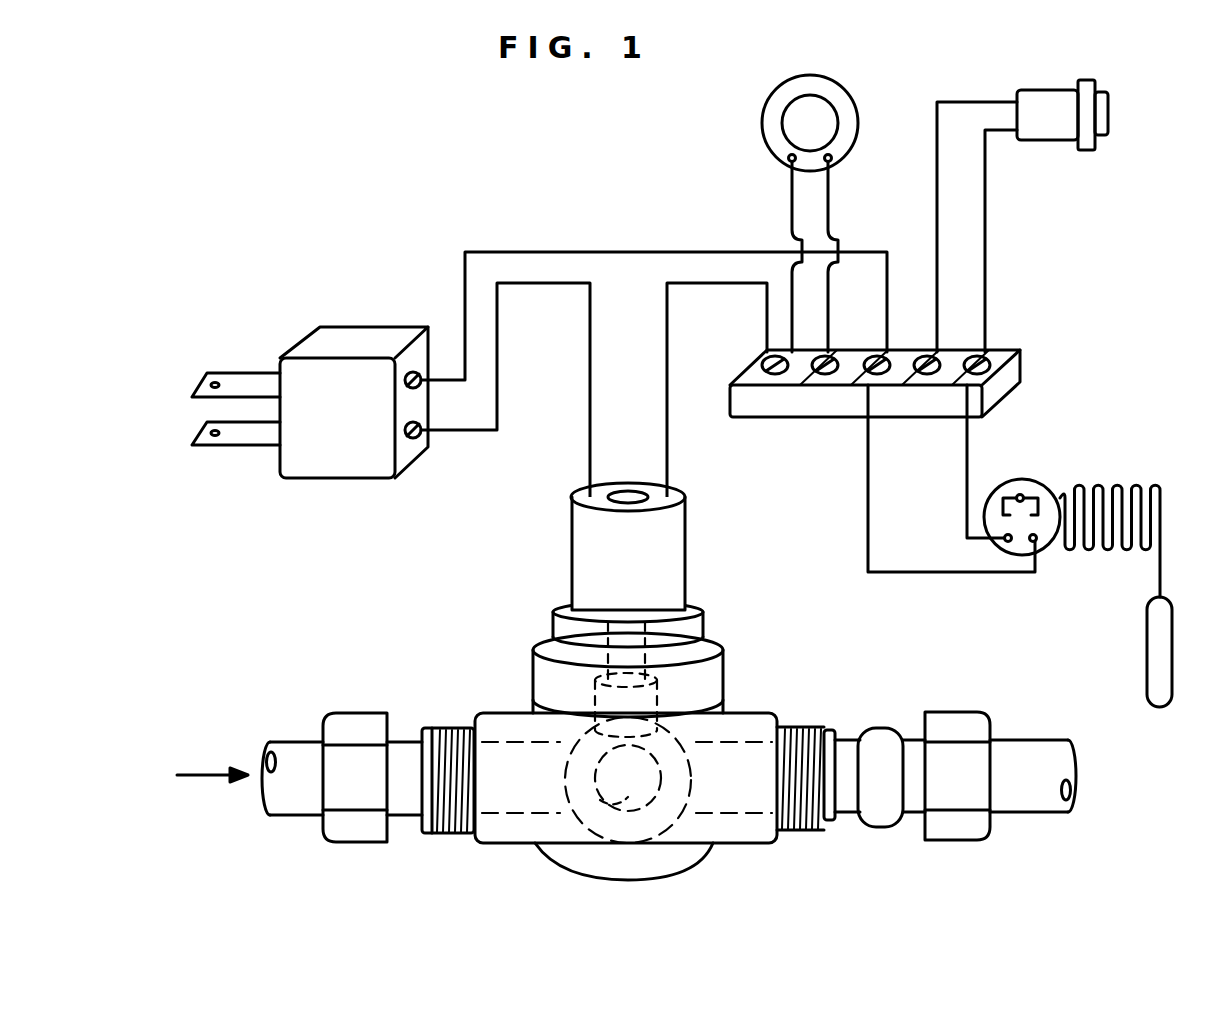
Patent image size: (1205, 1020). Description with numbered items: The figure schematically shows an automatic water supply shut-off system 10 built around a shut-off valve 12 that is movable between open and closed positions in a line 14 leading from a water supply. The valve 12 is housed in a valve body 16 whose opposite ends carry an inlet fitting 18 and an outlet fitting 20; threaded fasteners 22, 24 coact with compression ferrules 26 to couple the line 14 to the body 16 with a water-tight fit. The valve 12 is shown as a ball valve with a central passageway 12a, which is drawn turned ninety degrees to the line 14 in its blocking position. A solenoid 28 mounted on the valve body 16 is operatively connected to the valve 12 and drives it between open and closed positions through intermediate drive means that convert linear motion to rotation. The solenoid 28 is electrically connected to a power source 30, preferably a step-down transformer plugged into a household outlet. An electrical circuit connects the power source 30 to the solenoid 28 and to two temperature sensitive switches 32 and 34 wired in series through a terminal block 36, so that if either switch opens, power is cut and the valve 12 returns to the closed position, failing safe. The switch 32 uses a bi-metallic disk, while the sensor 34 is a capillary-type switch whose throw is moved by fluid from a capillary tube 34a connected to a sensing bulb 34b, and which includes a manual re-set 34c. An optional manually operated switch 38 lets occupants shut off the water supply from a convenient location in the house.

The automatic water supply shut-off system 10 is at (503, 213).
The shut-off valve 12 is at (690, 862).
The central passageway 12a is at (603, 840).
The line 14 is at (295, 742).
The valve body 16 is at (533, 665).
The inlet fitting 18 is at (447, 728).
The outlet fitting 20 is at (803, 727).
The threaded fastener 22 is at (353, 713).
The threaded fastener 24 is at (970, 712).
The compression ferrule 26 is at (878, 728).
The solenoid 28 is at (568, 563).
The power source 30 is at (345, 330).
The temperature sensitive switch 32 is at (763, 122).
The temperature sensitive switch 34 is at (1050, 549).
The capillary tube 34a is at (1153, 692).
The sensing bulb 34b is at (1144, 488).
The manual re-set 34c is at (1020, 496).
The terminal block 36 is at (808, 418).
The manually operated switch 38 is at (1052, 142).